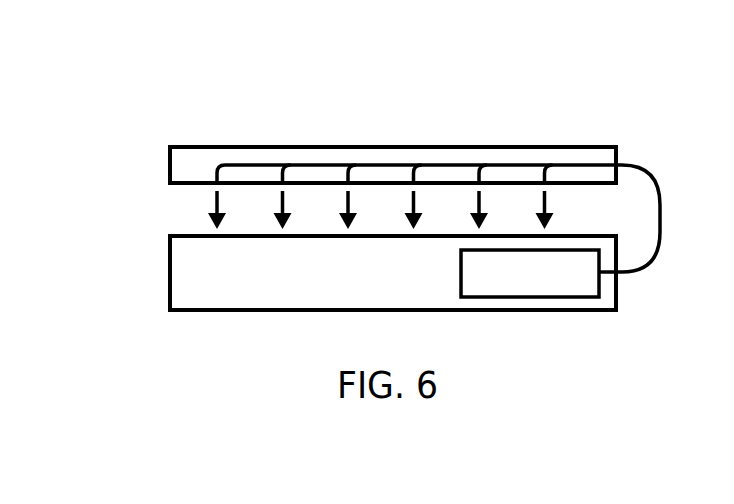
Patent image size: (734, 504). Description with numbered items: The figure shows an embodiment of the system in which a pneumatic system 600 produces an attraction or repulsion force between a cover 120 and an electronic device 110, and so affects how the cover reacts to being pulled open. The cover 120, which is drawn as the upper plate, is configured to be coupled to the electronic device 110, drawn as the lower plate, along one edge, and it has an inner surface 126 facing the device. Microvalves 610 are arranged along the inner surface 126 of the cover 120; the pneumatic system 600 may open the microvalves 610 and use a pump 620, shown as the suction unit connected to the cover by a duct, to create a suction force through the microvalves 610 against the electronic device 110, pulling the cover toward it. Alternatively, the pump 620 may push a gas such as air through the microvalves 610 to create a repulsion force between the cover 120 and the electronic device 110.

The pneumatic system 600 is at (666, 150).
The cover 120 is at (250, 147).
The inner surface 126 is at (195, 183).
The microvalves 610 is at (549, 186).
The electronic device 110 is at (210, 311).
The pump 620 is at (525, 298).